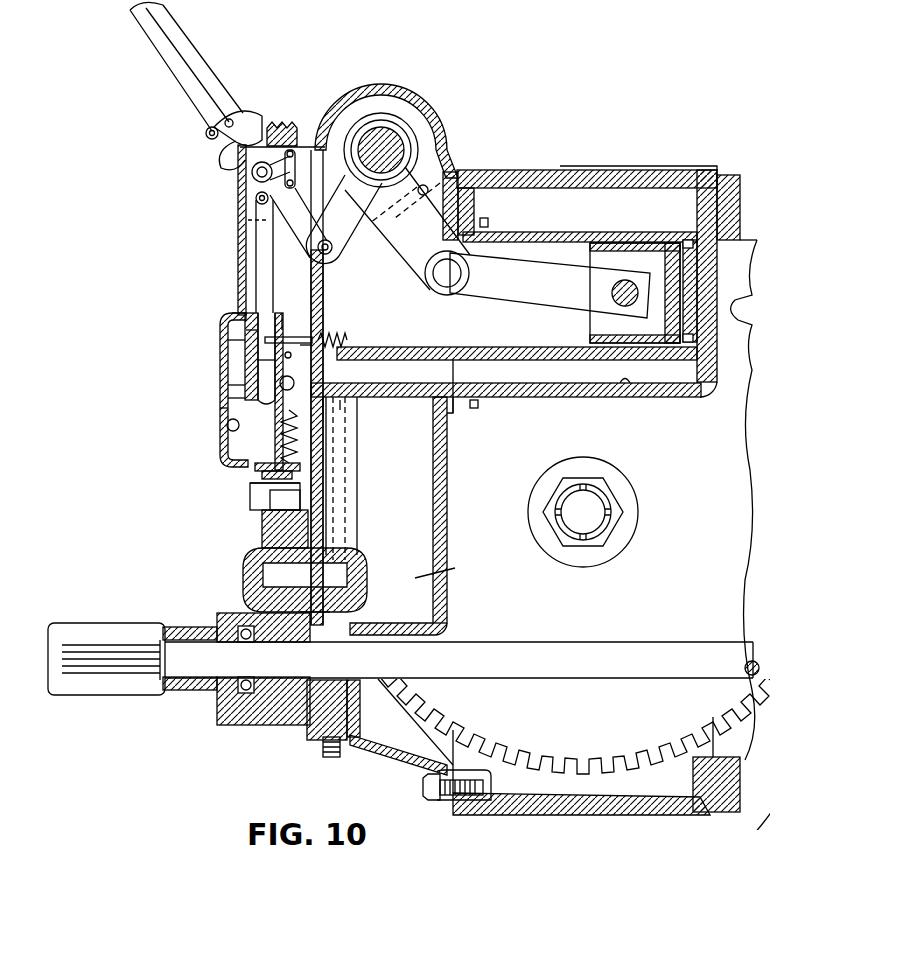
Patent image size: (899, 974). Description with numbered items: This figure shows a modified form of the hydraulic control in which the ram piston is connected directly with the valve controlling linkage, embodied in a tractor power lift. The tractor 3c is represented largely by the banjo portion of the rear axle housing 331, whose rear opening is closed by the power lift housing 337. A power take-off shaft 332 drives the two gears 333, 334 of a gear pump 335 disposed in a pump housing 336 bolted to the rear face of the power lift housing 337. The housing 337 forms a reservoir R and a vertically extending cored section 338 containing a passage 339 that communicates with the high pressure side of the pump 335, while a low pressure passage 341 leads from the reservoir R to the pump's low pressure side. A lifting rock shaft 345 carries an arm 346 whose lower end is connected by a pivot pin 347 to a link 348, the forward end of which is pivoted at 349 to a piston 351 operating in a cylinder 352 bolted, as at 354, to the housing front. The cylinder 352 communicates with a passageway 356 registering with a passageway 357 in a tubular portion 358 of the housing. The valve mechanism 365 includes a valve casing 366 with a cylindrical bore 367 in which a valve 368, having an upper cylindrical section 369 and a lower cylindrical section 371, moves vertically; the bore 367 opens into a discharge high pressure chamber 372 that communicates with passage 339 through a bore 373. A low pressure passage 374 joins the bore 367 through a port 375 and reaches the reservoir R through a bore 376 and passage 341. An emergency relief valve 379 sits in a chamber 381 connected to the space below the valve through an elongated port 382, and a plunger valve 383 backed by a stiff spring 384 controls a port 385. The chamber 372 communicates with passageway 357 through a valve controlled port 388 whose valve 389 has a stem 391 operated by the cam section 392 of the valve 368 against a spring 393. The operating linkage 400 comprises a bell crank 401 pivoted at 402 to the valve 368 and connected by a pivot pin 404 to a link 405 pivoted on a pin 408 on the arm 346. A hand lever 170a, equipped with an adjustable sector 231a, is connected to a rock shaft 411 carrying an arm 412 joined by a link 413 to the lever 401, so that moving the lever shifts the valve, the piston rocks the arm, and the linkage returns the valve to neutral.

The hand lever 170a is at (206, 66).
The adjustable sector 231a is at (245, 135).
The arm 412 is at (232, 160).
The operating linkage 400 is at (241, 204).
The rock shaft 411 is at (252, 176).
The link 413 is at (289, 148).
The bell crank 401 is at (308, 231).
The pivot 402 is at (252, 226).
The pivot pin 404 is at (334, 250).
The lifting rock shaft 345 is at (398, 157).
The arm 346 is at (420, 175).
The pin 408 is at (423, 195).
The link 405 is at (405, 231).
The rear axle housing 331 is at (627, 170).
The tractor 3c is at (723, 164).
The cylinder 352 is at (545, 232).
The bolt 354 is at (480, 221).
The passageway 357 is at (416, 352).
The passageway 356 is at (625, 387).
The link 348 is at (536, 300).
The pivot pin 347 is at (458, 281).
The pivot 349 is at (612, 293).
The piston 351 is at (623, 252).
The power lift housing 337 is at (452, 489).
The tubular portion 358 is at (420, 400).
The reservoir R is at (442, 569).
The cored section 338 is at (359, 470).
The passage 339 is at (348, 497).
The low pressure passage 341 is at (336, 430).
The chamber 381 is at (340, 456).
The bore 373 is at (284, 315).
The valve mechanism 365 is at (216, 352).
The upper cylindrical section 369 is at (256, 268).
The port 375 is at (250, 328).
The valve 368 is at (236, 312).
The valve controlled port 388 is at (290, 337).
The stem 391 is at (290, 352).
The valve 389 is at (312, 340).
The spring 393 is at (348, 338).
The cam section 392 is at (230, 340).
The cylindrical bore 367 is at (262, 365).
The lower cylindrical section 371 is at (236, 385).
The discharge high pressure chamber 372 is at (296, 381).
The valve casing 366 is at (236, 398).
The low pressure passage 374 is at (224, 408).
The bore 376 is at (226, 427).
The high pressure emergency relief valve 379 is at (280, 432).
The port 385 is at (262, 458).
The elongated port 382 is at (268, 471).
The plunger valve 383 is at (262, 483).
The spring 384 is at (250, 505).
The gear pump 335 is at (252, 540).
The pump gear 334 is at (262, 600).
The pump housing 336 is at (265, 600).
The pump gear 333 is at (252, 723).
The power take-off shaft 332 is at (521, 656).